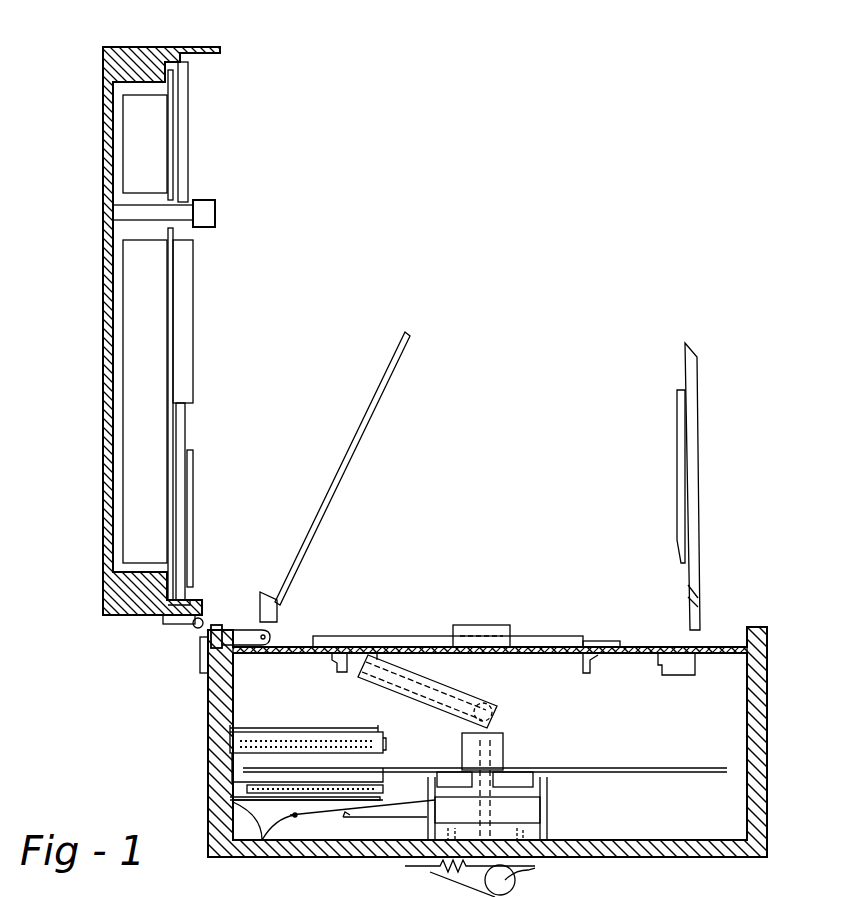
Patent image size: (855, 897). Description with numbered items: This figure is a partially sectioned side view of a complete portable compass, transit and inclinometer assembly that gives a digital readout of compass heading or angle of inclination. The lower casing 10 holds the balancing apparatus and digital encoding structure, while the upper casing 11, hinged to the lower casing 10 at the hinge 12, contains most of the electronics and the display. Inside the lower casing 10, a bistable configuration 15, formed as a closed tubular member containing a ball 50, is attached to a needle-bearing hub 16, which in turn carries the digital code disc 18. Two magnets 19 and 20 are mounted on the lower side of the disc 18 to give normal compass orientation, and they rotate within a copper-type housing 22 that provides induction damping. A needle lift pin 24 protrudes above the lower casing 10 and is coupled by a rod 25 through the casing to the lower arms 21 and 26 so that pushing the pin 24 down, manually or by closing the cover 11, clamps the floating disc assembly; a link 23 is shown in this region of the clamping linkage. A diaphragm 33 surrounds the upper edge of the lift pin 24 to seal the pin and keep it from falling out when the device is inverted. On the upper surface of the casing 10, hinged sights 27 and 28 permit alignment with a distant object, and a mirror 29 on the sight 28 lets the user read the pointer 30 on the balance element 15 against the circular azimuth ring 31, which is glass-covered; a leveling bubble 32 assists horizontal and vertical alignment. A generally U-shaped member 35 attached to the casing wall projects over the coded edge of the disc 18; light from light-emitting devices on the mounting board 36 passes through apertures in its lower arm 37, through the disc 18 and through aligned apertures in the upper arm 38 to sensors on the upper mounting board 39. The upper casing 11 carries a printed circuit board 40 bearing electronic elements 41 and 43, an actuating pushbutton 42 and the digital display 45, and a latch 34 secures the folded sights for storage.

The lower casing 10 is at (760, 695).
The upper casing 11 is at (110, 56).
The hinge 12 is at (193, 628).
The bistable configuration 15 is at (440, 690).
The needle-bearing hub 16 is at (500, 748).
The digital code disc 18 is at (640, 767).
The magnet 19 is at (455, 780).
The magnet 20 is at (515, 780).
The lower arm 21 is at (278, 845).
The housing 22 is at (543, 818).
The rod 23 is at (338, 810).
The needle lift pin 24 is at (266, 612).
The rod 25 is at (215, 707).
The lower arm 26 is at (400, 820).
The hinged sight 27 is at (365, 410).
The hinged sight 28 is at (684, 360).
The mirror 29 is at (677, 440).
The pointer 30 is at (352, 670).
The circular azimuth ring 31 is at (343, 634).
The leveling bubble 32 is at (480, 624).
The diaphragm 33 is at (216, 628).
The latch 34 is at (210, 48).
The U-shaped member 35 is at (275, 745).
The mounting board 36 is at (230, 800).
The lower arm 37 is at (384, 790).
The upper arm 38 is at (384, 742).
The upper mounting board 39 is at (335, 733).
The printed circuit board 40 is at (172, 86).
The electronic element 41 is at (152, 437).
The actuating pushbutton 42 is at (214, 212).
The electronic element 43 is at (155, 137).
The digital display 45 is at (183, 320).
The ball 50 is at (525, 895).